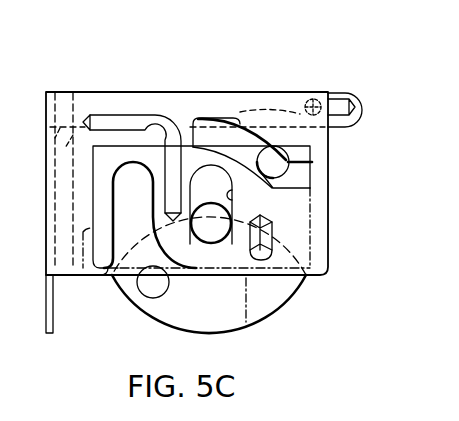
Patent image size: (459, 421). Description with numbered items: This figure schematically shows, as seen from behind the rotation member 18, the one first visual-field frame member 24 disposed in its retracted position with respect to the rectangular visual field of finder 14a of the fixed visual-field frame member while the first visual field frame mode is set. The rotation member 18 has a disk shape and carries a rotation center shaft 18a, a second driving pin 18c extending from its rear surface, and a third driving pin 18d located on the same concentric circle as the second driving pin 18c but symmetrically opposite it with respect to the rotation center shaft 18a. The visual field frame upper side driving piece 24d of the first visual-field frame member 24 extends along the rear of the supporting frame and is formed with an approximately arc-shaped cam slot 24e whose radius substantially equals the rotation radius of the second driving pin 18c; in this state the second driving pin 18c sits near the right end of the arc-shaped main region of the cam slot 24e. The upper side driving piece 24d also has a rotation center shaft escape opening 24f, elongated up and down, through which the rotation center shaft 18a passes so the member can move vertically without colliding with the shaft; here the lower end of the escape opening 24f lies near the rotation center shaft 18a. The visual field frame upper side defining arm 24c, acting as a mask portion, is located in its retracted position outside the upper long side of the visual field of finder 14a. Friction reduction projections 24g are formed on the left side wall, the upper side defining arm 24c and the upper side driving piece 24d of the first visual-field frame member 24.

The one first visual-field frame member 24 is at (147, 92).
The friction reduction projections 24g is at (92, 116).
The cam slot 24e is at (233, 120).
The visual field frame upper side driving piece 24d is at (285, 105).
The visual field frame upper side defining arm 24c is at (360, 120).
The second driving pin 18c is at (283, 172).
The rotation center shaft escape opening 24f is at (228, 193).
The visual field of finder 14a is at (86, 270).
The rotation center shaft 18a is at (213, 233).
The third driving pin 18d is at (147, 288).
The rotation member 18 is at (270, 298).